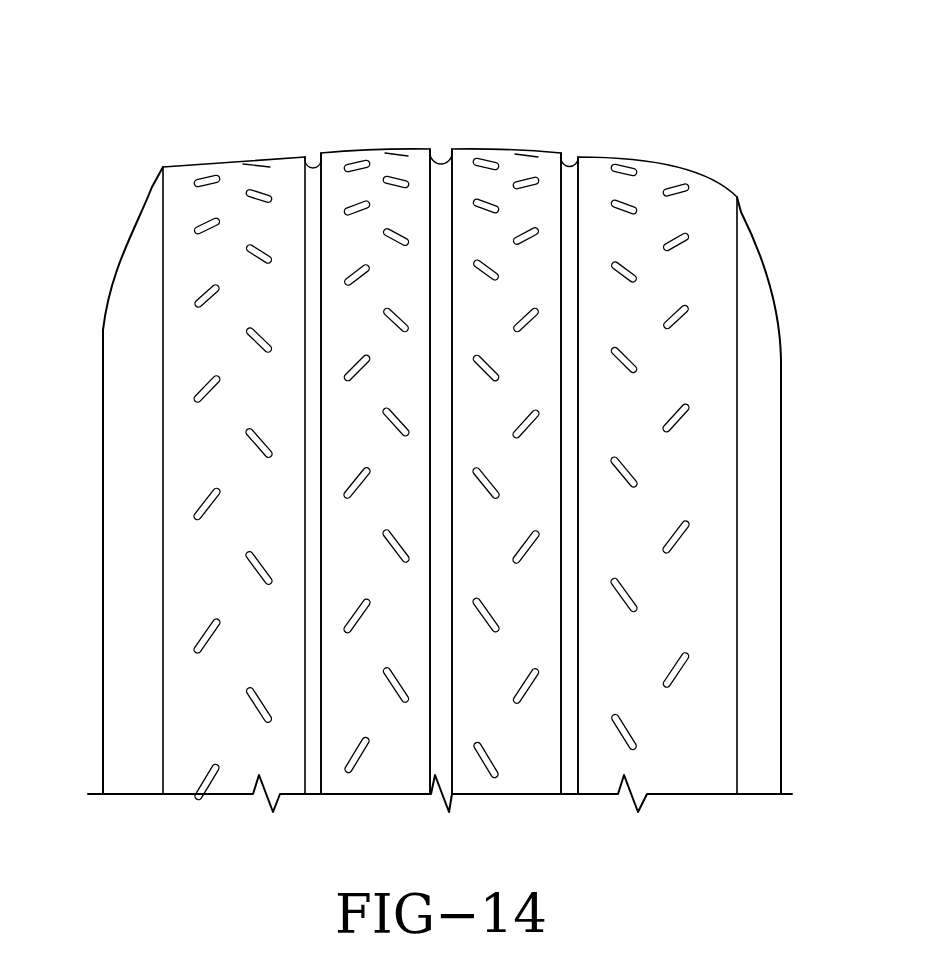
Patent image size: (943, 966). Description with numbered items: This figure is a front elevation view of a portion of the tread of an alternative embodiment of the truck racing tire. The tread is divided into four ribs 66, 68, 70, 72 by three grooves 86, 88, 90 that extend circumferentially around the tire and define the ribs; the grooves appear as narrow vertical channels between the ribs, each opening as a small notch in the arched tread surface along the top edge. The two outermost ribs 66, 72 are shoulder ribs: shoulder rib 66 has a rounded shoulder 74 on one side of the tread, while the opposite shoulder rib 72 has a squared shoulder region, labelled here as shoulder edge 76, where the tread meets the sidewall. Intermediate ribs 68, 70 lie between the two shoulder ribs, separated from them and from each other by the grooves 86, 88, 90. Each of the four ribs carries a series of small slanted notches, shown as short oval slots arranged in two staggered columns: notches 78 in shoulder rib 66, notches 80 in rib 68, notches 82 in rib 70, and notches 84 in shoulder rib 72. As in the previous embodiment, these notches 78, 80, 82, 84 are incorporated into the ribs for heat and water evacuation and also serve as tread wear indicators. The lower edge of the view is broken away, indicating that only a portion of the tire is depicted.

The rib 66 is at (659, 151).
The rib 68 is at (484, 144).
The rib 70 is at (402, 144).
The rib 72 is at (246, 154).
The rounded shoulder 74 is at (710, 177).
The tread shoulder edge 76 is at (172, 165).
The notch 78 is at (672, 420).
The notch 80 is at (528, 426).
The notch 82 is at (357, 374).
The notch 84 is at (210, 633).
The groove 86 is at (570, 163).
The groove 88 is at (444, 162).
The groove 90 is at (314, 163).